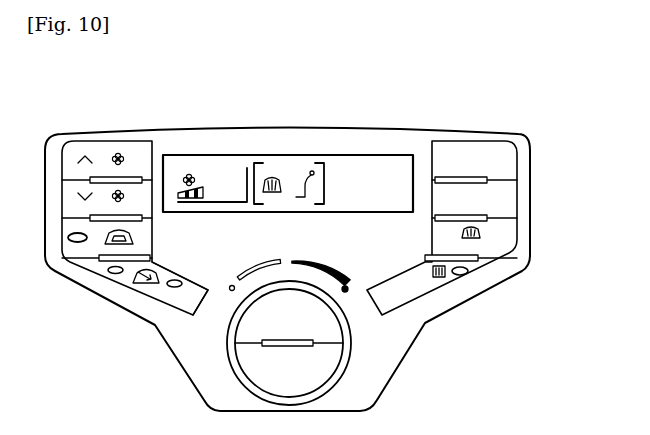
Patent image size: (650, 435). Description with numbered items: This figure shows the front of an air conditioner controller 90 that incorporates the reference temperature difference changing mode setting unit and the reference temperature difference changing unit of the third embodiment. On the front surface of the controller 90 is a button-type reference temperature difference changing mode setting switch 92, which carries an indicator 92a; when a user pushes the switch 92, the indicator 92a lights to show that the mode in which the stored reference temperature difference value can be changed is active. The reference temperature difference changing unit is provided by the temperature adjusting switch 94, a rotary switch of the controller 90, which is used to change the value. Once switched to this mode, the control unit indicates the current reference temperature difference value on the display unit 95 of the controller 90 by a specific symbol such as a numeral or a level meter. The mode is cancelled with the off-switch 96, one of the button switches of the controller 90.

The air conditioner controller 90 is at (400, 130).
The reference temperature difference changing mode setting switch 92 is at (188, 305).
The indicator 92a is at (173, 288).
The temperature adjusting switch 94 is at (345, 343).
The display unit 95 is at (353, 168).
The off-switch 96 is at (329, 367).